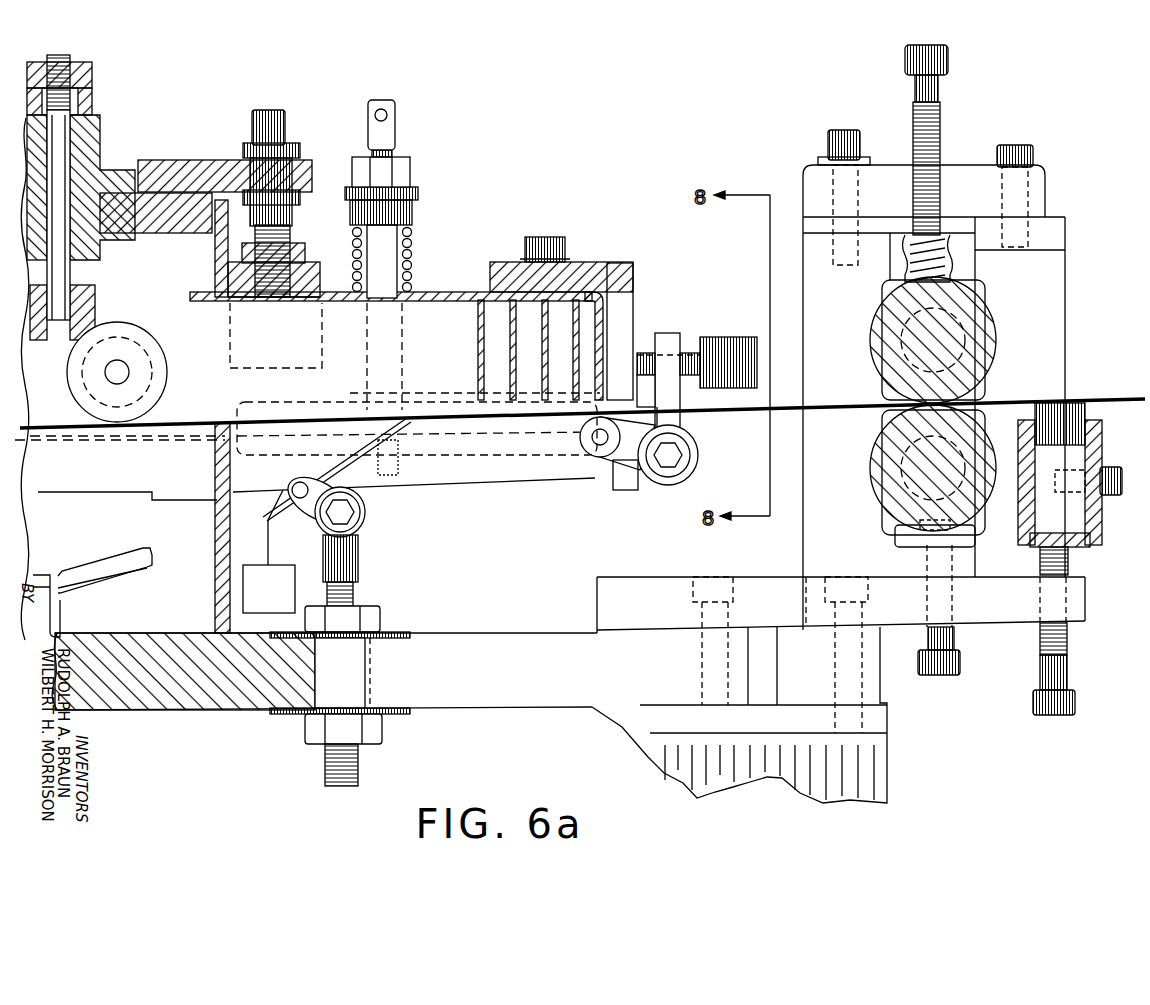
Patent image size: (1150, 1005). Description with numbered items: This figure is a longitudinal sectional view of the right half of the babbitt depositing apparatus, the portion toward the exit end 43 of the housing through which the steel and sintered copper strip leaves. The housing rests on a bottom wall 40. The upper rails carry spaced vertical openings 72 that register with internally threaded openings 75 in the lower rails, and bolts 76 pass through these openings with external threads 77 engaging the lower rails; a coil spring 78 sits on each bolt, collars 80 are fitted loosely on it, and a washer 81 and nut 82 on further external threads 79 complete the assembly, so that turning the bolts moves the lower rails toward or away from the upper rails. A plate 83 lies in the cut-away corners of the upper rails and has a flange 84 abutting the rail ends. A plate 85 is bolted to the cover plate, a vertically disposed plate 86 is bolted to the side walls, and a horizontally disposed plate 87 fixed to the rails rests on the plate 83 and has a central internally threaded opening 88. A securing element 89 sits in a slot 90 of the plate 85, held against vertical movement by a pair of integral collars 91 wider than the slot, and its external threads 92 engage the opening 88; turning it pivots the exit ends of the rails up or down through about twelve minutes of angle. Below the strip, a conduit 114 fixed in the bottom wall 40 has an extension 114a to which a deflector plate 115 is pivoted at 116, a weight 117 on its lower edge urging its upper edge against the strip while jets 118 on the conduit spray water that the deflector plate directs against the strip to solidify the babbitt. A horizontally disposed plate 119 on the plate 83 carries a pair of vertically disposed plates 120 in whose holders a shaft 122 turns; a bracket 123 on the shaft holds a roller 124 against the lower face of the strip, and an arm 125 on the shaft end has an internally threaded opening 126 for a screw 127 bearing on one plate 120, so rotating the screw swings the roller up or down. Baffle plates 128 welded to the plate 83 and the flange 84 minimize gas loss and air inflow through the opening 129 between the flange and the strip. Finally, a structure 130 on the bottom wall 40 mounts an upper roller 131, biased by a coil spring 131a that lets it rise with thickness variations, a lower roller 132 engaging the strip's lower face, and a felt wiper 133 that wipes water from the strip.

The bottom wall 40 is at (222, 708).
The exit end 43 is at (1068, 397).
The vertically disposed openings 72 is at (367, 348).
The internally threaded openings 75 is at (393, 478).
The bolts 76 is at (388, 102).
The external threads 77 is at (402, 460).
The coil spring 78 is at (412, 254).
The external threads 79 is at (397, 228).
The collars 80 is at (362, 210).
The washer 81 is at (418, 195).
The nut 82 is at (362, 174).
The plate 83 is at (443, 300).
The flange 84 is at (605, 342).
The plate 85 is at (180, 166).
The vertically disposed plate 86 is at (216, 277).
The horizontally disposed plate 87 is at (318, 272).
The internally threaded opening 88 is at (257, 300).
The securing element 89 is at (268, 112).
The slot 90 is at (295, 172).
The integral collars 91 is at (246, 148).
The external threads 92 is at (254, 244).
The conduit 114 is at (358, 560).
The extension 114a is at (293, 481).
The deflector plate 115 is at (358, 454).
The pivot 116 is at (298, 492).
The weight 117 is at (280, 570).
The jets 118 is at (370, 482).
The horizontally disposed plate 119 is at (506, 265).
The vertically disposed plates 120 is at (623, 306).
The shaft 122 is at (672, 455).
The bracket 123 is at (630, 490).
The roller 124 is at (600, 457).
The arm 125 is at (680, 415).
The internally threaded opening 126 is at (691, 355).
The screw 127 is at (732, 338).
The baffle plates 128 is at (482, 362).
The opening 129 is at (622, 400).
The structure 130 is at (902, 176).
The roller 131 is at (992, 322).
The coil spring 131a is at (1048, 252).
The roller 132 is at (880, 472).
The felt wiper 133 is at (1088, 413).